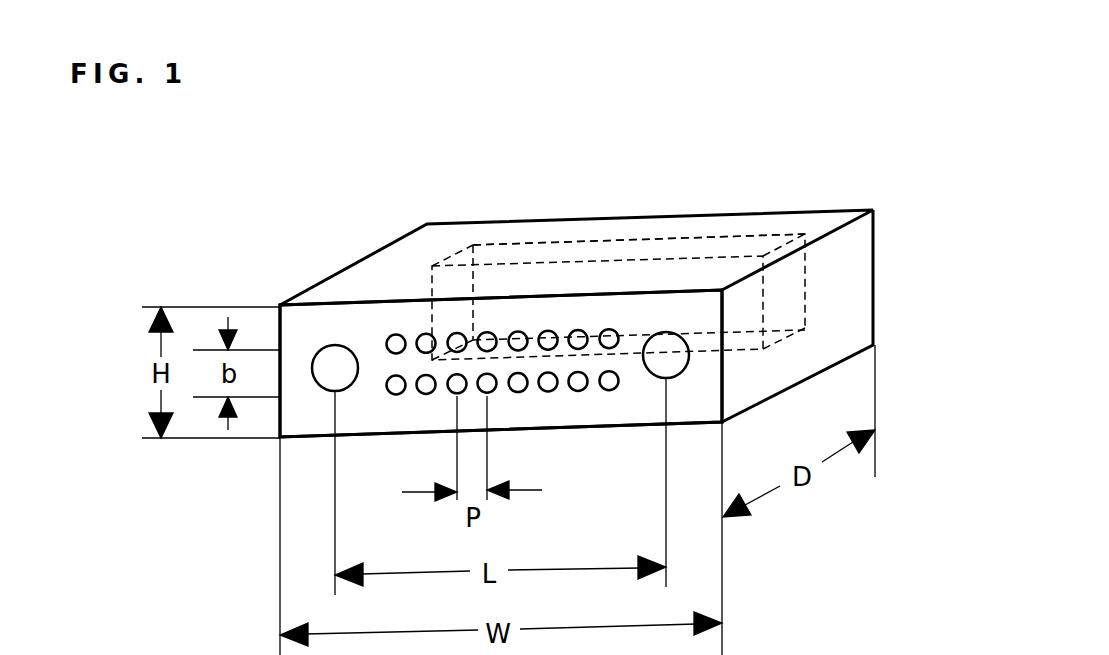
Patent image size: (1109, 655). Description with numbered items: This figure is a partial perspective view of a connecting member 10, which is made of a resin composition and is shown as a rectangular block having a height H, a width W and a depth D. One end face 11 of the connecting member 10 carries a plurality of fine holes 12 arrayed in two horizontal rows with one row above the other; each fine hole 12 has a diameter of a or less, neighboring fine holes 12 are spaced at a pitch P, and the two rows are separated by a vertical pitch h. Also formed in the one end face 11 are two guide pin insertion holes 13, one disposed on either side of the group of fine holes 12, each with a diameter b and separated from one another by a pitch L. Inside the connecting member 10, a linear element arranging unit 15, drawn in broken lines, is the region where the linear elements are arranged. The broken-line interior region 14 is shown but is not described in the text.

The connecting member 10 is at (837, 290).
The one end face 11 is at (352, 323).
The fine holes 12 is at (395, 343).
The guide pin insertion holes 13 is at (332, 368).
The internal cavity 14 is at (755, 232).
The linear element arranging unit 15 is at (582, 240).